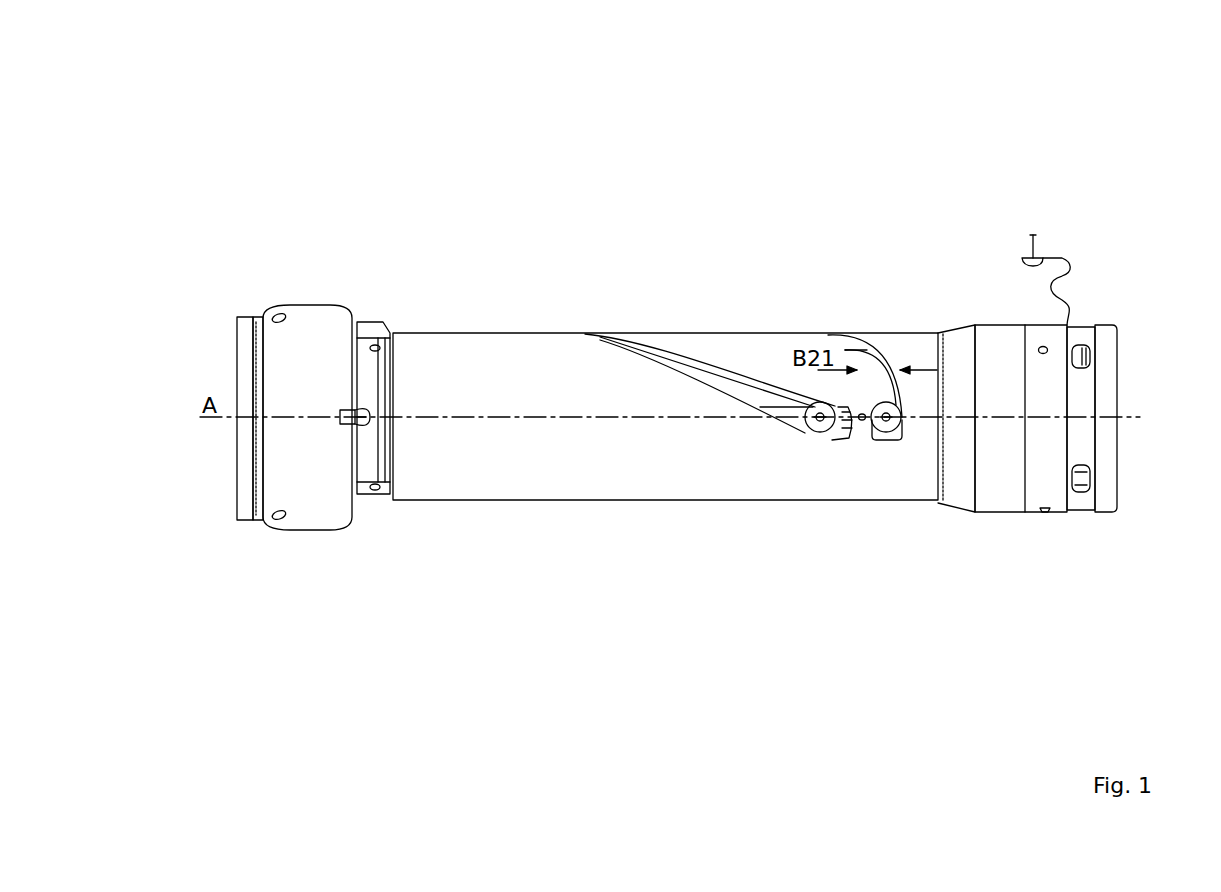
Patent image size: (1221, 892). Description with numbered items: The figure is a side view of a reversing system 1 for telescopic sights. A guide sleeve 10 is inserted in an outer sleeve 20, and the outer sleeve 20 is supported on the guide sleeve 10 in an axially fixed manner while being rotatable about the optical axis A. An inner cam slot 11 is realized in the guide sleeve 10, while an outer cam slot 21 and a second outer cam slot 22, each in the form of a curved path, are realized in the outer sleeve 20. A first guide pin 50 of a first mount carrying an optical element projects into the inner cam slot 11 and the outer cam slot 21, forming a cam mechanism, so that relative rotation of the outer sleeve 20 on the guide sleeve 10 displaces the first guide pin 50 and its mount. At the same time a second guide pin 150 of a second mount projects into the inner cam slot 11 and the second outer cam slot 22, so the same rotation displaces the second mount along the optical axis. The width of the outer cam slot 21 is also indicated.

The reversing system 1 is at (192, 157).
The guide sleeve 10 is at (1102, 353).
The inner cam slot 11 is at (777, 403).
The outer sleeve 20 is at (507, 347).
The outer cam slot 21 is at (860, 348).
The second outer cam slot 22 is at (640, 338).
The first guide pin 50 is at (893, 437).
The second guide pin 150 is at (818, 433).